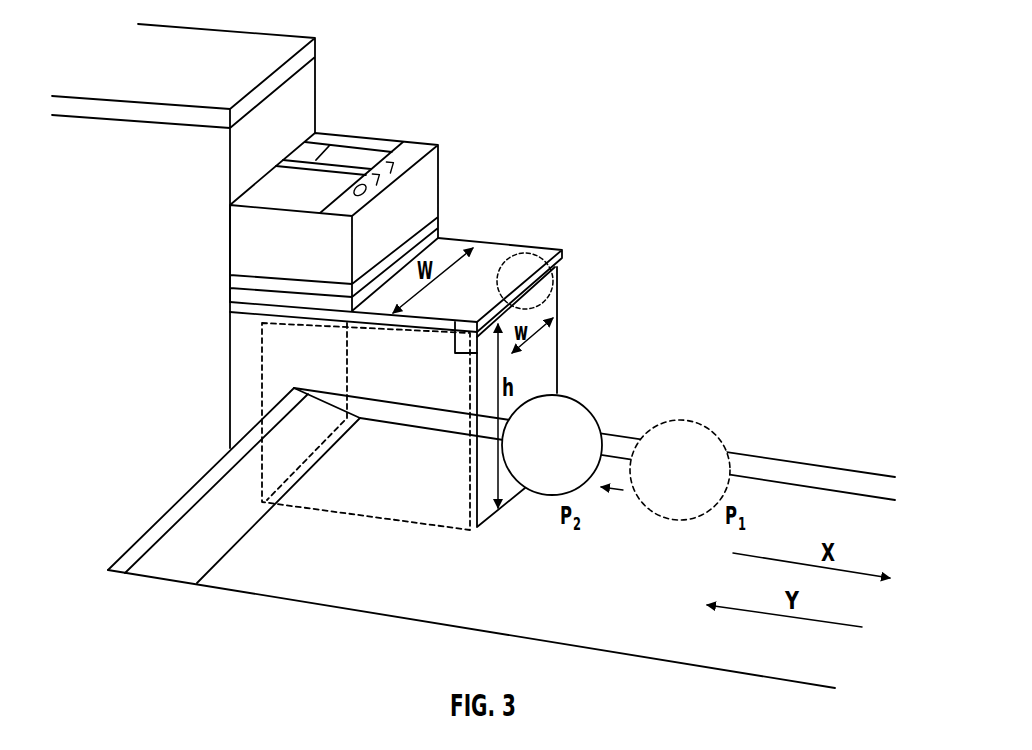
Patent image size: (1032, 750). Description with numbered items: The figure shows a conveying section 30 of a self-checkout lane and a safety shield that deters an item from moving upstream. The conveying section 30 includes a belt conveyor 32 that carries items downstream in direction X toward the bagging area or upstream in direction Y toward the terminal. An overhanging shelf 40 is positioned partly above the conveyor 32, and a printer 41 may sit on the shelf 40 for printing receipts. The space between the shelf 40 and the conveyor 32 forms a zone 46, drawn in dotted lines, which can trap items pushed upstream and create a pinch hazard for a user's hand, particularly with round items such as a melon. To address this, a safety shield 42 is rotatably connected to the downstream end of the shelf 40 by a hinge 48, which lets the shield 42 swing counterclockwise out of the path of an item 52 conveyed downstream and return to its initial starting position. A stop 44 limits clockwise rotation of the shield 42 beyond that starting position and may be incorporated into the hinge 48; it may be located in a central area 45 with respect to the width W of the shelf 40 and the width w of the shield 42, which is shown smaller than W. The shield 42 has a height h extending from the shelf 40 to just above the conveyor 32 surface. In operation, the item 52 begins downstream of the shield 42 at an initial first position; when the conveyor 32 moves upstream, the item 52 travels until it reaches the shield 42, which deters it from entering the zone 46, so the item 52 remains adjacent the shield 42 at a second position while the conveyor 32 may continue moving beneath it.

The conveying section 30 is at (780, 367).
The conveyor 32 is at (586, 601).
The overhanging shelf 40 is at (522, 258).
The printer 41 is at (427, 183).
The safety shield 42 is at (542, 353).
The stop 44 is at (463, 340).
The central area 45 is at (547, 248).
The zone 46 is at (421, 528).
The hinge 48 is at (545, 282).
The item 52 is at (588, 408).